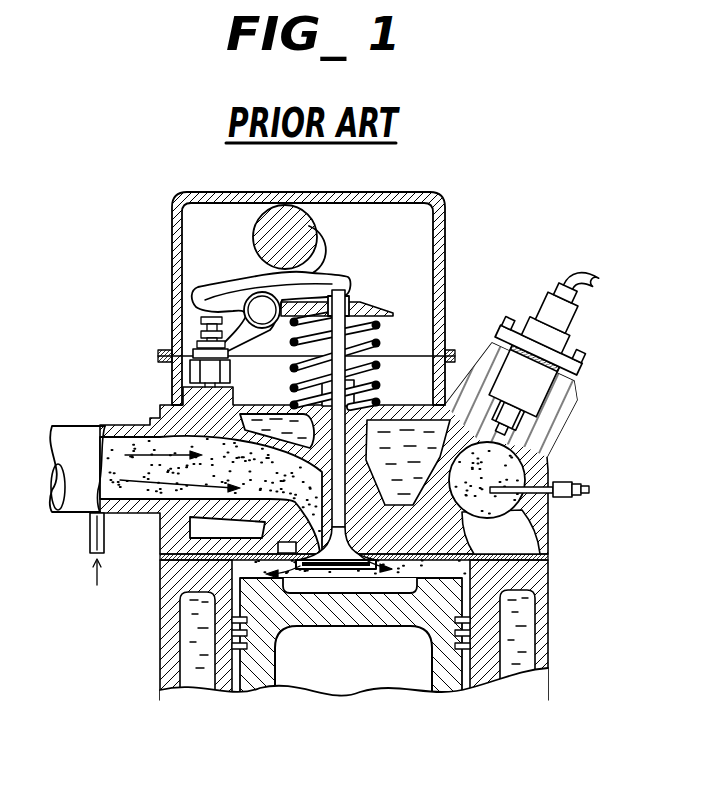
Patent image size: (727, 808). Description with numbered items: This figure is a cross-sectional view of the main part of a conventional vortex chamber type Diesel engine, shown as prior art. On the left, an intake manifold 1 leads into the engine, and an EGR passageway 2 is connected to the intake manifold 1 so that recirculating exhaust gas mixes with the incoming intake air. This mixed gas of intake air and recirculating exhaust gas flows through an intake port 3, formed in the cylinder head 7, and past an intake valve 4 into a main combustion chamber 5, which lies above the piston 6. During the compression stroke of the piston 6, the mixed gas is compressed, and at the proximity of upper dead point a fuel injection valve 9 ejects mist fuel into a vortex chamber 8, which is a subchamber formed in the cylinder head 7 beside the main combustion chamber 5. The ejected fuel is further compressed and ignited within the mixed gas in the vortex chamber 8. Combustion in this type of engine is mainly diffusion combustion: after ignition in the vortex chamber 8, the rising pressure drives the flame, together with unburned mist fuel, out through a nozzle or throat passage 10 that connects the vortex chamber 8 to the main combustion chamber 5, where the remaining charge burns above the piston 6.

The intake manifold 1 is at (124, 432).
The EGR passageway 2 is at (95, 514).
The intake port 3 is at (200, 440).
The intake valve 4 is at (338, 564).
The main combustion chamber 5 is at (430, 562).
The piston 6 is at (457, 668).
The cylinder head 7 is at (508, 468).
The vortex chamber 8 is at (596, 488).
The fuel injection valve 9 is at (545, 428).
The throat passage 10 is at (485, 547).